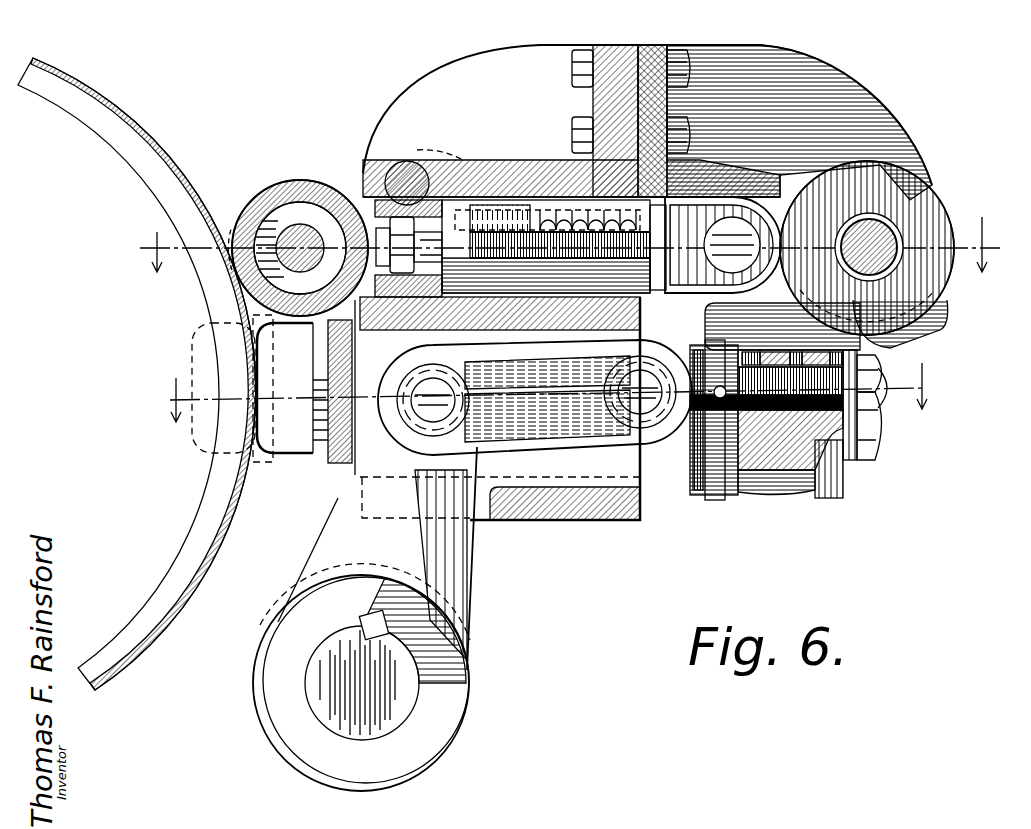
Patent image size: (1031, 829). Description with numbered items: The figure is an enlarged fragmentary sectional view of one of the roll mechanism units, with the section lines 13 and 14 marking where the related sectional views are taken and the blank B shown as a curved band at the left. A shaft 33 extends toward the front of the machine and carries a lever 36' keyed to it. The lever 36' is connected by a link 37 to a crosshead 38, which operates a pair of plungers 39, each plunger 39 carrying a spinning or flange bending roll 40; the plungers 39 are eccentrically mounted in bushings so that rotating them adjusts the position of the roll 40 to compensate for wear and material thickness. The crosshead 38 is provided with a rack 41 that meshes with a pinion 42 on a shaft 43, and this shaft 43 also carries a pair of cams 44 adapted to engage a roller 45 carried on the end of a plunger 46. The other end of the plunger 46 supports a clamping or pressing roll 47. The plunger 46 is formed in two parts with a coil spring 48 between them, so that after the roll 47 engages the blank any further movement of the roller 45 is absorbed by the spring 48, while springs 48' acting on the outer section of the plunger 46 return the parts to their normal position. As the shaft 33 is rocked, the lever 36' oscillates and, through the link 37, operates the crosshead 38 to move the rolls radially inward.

The brake band B is at (170, 158).
The section line 13 is at (566, 244).
The section line 14 is at (548, 392).
The shaft 33 is at (400, 670).
The lever 36' is at (398, 558).
The link 37 is at (590, 423).
The crosshead 38 is at (850, 467).
The plunger 39 is at (668, 455).
The spinning or flange bending roll 40 is at (260, 388).
The rack 41 is at (927, 323).
The pinion 42 is at (933, 287).
The shaft 43 is at (877, 237).
The cam 44 is at (943, 223).
The roller 45 is at (853, 157).
The plunger 46 is at (507, 203).
The clamping or pressing roll 47 is at (260, 197).
The coil spring 48 is at (611, 140).
The spring 48' is at (431, 208).